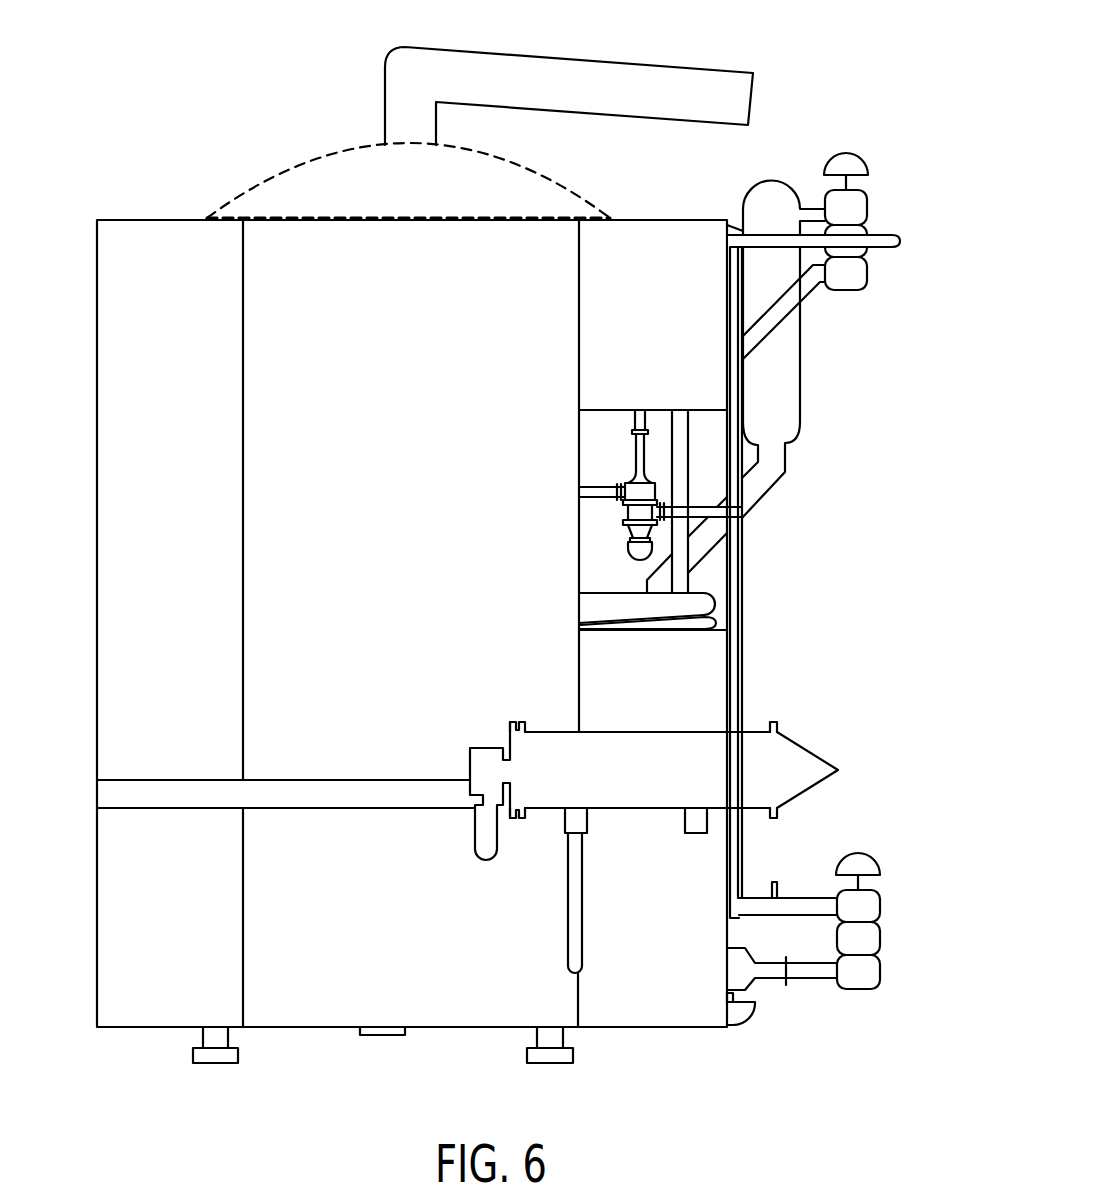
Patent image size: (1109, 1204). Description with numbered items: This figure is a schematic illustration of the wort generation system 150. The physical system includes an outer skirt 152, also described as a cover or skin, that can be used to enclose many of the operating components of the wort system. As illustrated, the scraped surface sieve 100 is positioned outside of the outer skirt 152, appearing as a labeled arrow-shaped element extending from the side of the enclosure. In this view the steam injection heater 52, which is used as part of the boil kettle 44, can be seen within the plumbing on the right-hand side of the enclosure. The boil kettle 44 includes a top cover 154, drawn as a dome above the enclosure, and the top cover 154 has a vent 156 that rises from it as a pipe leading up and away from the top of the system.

The wort generation system 150 is at (427, 133).
The outer skirt 152 is at (97, 350).
The top cover 154 is at (473, 157).
The vent 156 is at (678, 80).
The boil kettle 44 is at (535, 204).
The steam injection heater 52 is at (628, 518).
The scraped surface sieve 100 is at (757, 732).